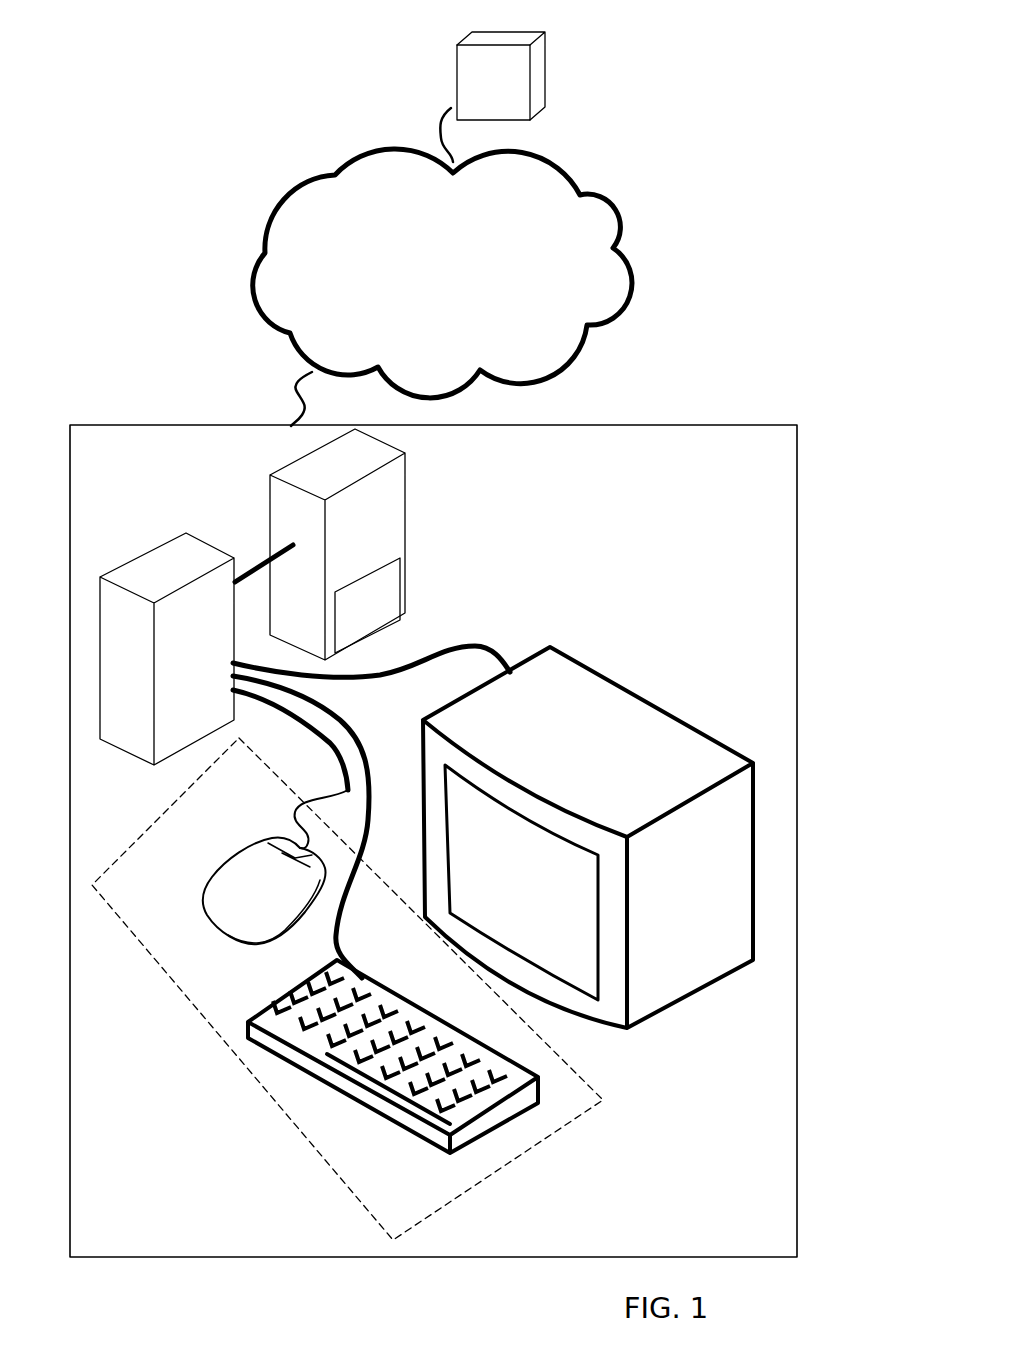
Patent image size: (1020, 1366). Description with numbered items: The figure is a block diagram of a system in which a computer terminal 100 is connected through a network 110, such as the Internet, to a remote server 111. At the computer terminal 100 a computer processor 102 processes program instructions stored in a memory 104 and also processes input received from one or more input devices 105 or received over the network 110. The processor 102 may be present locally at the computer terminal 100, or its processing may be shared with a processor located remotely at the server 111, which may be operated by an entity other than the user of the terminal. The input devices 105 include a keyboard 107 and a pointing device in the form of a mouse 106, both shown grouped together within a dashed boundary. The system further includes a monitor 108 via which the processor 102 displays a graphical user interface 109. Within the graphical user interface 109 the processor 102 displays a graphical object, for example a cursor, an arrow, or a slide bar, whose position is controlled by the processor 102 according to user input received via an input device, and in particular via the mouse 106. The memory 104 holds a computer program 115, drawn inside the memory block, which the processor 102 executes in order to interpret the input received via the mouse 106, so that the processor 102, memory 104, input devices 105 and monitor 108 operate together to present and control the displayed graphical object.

The computer terminal 100 is at (232, 424).
The computer processor 102 is at (189, 557).
The memory 104 is at (382, 528).
The input devices 105 is at (253, 1072).
The mouse 106 is at (248, 885).
The keyboard 107 is at (523, 1078).
The monitor 108 is at (570, 787).
The graphical user interface 109 is at (495, 922).
The network 110 is at (412, 310).
The server 111 is at (457, 82).
The computer program 115 is at (382, 602).